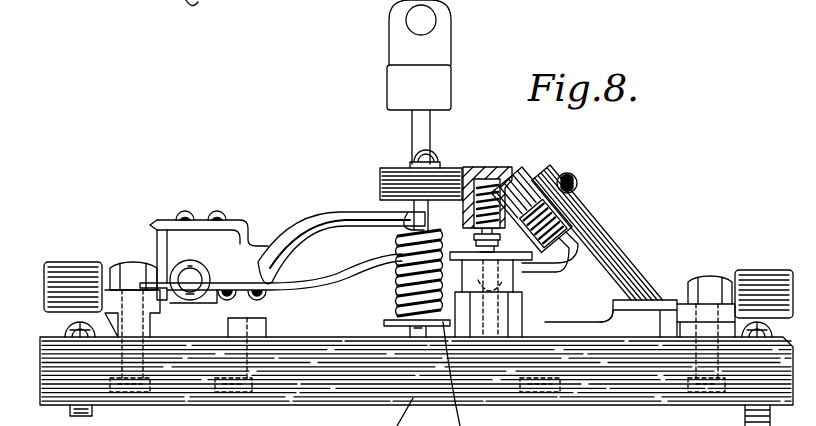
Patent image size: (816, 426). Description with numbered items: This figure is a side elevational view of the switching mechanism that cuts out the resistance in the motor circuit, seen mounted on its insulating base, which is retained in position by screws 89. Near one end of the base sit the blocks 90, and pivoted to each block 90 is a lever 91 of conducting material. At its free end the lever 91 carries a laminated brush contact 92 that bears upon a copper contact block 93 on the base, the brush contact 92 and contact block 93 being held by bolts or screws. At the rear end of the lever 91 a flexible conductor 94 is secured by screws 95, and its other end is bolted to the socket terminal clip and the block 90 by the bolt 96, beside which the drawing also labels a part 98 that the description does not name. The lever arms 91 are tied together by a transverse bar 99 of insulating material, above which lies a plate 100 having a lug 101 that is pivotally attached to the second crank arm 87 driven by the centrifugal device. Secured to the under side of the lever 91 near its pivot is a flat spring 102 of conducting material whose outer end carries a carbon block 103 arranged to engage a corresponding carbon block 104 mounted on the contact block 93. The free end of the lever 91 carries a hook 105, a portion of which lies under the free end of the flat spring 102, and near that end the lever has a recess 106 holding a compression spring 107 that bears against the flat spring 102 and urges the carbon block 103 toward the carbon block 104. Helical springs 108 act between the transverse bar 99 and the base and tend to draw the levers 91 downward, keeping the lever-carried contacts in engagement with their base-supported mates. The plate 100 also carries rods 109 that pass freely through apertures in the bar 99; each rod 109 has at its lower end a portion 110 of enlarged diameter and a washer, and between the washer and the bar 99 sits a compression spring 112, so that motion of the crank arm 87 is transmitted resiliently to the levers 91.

The second crank arm 87 is at (68, 270).
The screws 89 is at (64, 328).
The blocks 90 is at (268, 325).
The lever 91 is at (320, 210).
The laminated brush contact 92 is at (630, 268).
The contact block 93 is at (660, 305).
The conductors 94 is at (168, 225).
The screws 95 is at (221, 212).
The bolt 96 is at (132, 268).
The block 98 is at (155, 313).
The transverse bar 99 is at (442, 182).
The plate 100 is at (448, 108).
The lug 101 is at (420, 32).
The flat springs 102 is at (352, 270).
The carbon blocks 103 is at (518, 285).
The carbon block 104 is at (524, 302).
The hook 105 is at (570, 266).
The recess 106 is at (492, 167).
The compression spring 107 is at (547, 172).
The helical springs 108 is at (408, 328).
The rods 109 is at (412, 127).
The portions of enlarged diameter 110 is at (396, 268).
The compression springs 112 is at (408, 241).